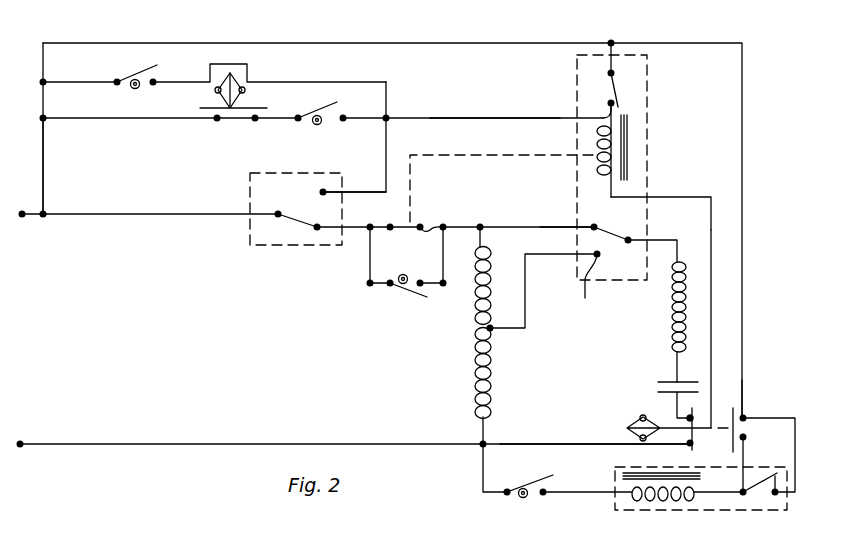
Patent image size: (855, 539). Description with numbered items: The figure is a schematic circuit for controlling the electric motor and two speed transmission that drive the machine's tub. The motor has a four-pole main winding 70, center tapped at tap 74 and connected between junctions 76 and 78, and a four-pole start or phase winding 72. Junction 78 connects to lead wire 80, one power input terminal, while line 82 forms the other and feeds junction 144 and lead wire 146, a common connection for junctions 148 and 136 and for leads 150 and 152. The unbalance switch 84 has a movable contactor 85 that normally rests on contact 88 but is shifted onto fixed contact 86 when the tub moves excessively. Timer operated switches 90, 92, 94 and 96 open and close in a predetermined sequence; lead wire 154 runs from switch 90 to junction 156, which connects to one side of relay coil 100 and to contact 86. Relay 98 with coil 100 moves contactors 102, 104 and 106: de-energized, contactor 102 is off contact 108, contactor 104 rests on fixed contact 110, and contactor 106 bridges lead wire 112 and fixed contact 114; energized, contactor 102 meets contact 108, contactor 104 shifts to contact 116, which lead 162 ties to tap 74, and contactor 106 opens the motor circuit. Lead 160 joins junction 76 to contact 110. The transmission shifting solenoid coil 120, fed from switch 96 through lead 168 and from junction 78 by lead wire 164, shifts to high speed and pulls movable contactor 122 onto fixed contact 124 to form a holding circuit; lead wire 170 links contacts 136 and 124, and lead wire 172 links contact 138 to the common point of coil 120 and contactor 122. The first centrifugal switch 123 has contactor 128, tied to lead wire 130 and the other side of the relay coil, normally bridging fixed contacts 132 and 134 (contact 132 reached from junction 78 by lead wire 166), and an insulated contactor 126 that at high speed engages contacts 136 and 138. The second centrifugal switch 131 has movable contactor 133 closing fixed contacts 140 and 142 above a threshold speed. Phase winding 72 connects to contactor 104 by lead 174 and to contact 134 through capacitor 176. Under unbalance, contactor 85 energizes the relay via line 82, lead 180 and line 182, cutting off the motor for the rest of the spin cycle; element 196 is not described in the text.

The main winding 70 is at (491, 397).
The start or phase winding 72 is at (670, 328).
The center tap 74 is at (495, 332).
The junction 76 is at (484, 230).
The junction 78 is at (487, 441).
The lead wire 80 is at (163, 444).
The power input terminal line 82 is at (123, 215).
The unbalance switch 84 is at (310, 176).
The movable contactor 85 is at (297, 217).
The fixed contact 86 is at (325, 192).
The contact 88 is at (300, 222).
The timer operated switch 90 is at (153, 82).
The timer operated switch 92 is at (345, 112).
The timer operated switch 94 is at (391, 281).
The timer operated switch 96 is at (520, 485).
The relay 98 is at (637, 110).
The relay coil 100 is at (620, 143).
The movable contactor 102 is at (617, 92).
The contactor 104 is at (605, 233).
The contactor 106 is at (415, 224).
The contact 108 is at (611, 103).
The fixed contact 110 is at (595, 227).
The lead wire 112 is at (351, 229).
The fixed contact 114 is at (426, 229).
The contact 116 is at (593, 288).
The solenoid coil 120 is at (682, 497).
The movable contactor 122 is at (776, 494).
The first centrifugal switch 123 is at (718, 428).
The fixed contact 124 is at (764, 470).
The contactor 126 is at (742, 410).
The contactor 128 is at (700, 410).
The lead wire 130 is at (711, 265).
The second centrifugal switch 131 is at (258, 108).
The fixed contact 132 is at (687, 444).
The movable contactor 133 is at (252, 98).
The fixed contact 134 is at (683, 414).
The contact 136 is at (745, 418).
The contact 138 is at (732, 450).
The fixed contact 140 is at (217, 122).
The fixed contact 142 is at (255, 122).
The junction 144 is at (45, 212).
The lead wire 146 is at (160, 43).
The junction 148 is at (611, 43).
The lead 150 is at (55, 82).
The lead 152 is at (63, 120).
The lead wire 154 is at (386, 100).
The junction 156 is at (398, 118).
The lead 160 is at (524, 226).
The lead 162 is at (526, 296).
The lead wire 164 is at (480, 465).
The lead wire 166 is at (548, 443).
The lead 168 is at (563, 490).
The lead wire 170 is at (763, 462).
The lead wire 172 is at (743, 470).
The lead 174 is at (711, 215).
The capacitor 176 is at (690, 383).
The lead 180 is at (386, 148).
The line 182 is at (493, 120).
The ground lead 196 is at (195, 538).